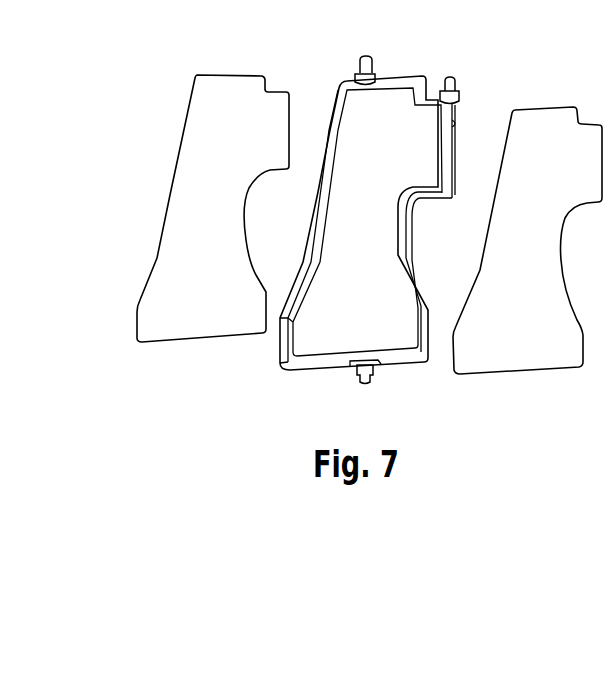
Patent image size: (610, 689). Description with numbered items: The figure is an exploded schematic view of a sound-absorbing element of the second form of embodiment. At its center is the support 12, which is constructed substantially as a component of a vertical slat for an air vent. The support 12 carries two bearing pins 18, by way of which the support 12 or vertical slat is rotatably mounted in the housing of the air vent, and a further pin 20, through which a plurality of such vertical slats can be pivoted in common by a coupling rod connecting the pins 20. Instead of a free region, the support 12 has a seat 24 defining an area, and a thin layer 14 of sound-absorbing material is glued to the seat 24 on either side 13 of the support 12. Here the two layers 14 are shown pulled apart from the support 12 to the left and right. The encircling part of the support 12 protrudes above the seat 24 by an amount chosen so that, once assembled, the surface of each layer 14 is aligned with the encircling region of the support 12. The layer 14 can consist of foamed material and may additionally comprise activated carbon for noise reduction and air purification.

The support 12 is at (333, 224).
The side of the support 13 is at (362, 124).
The layer of sound-absorbing material 14 is at (212, 173).
The bearing pin 18 is at (361, 54).
The pin 20 is at (452, 78).
The seat 24 is at (357, 317).